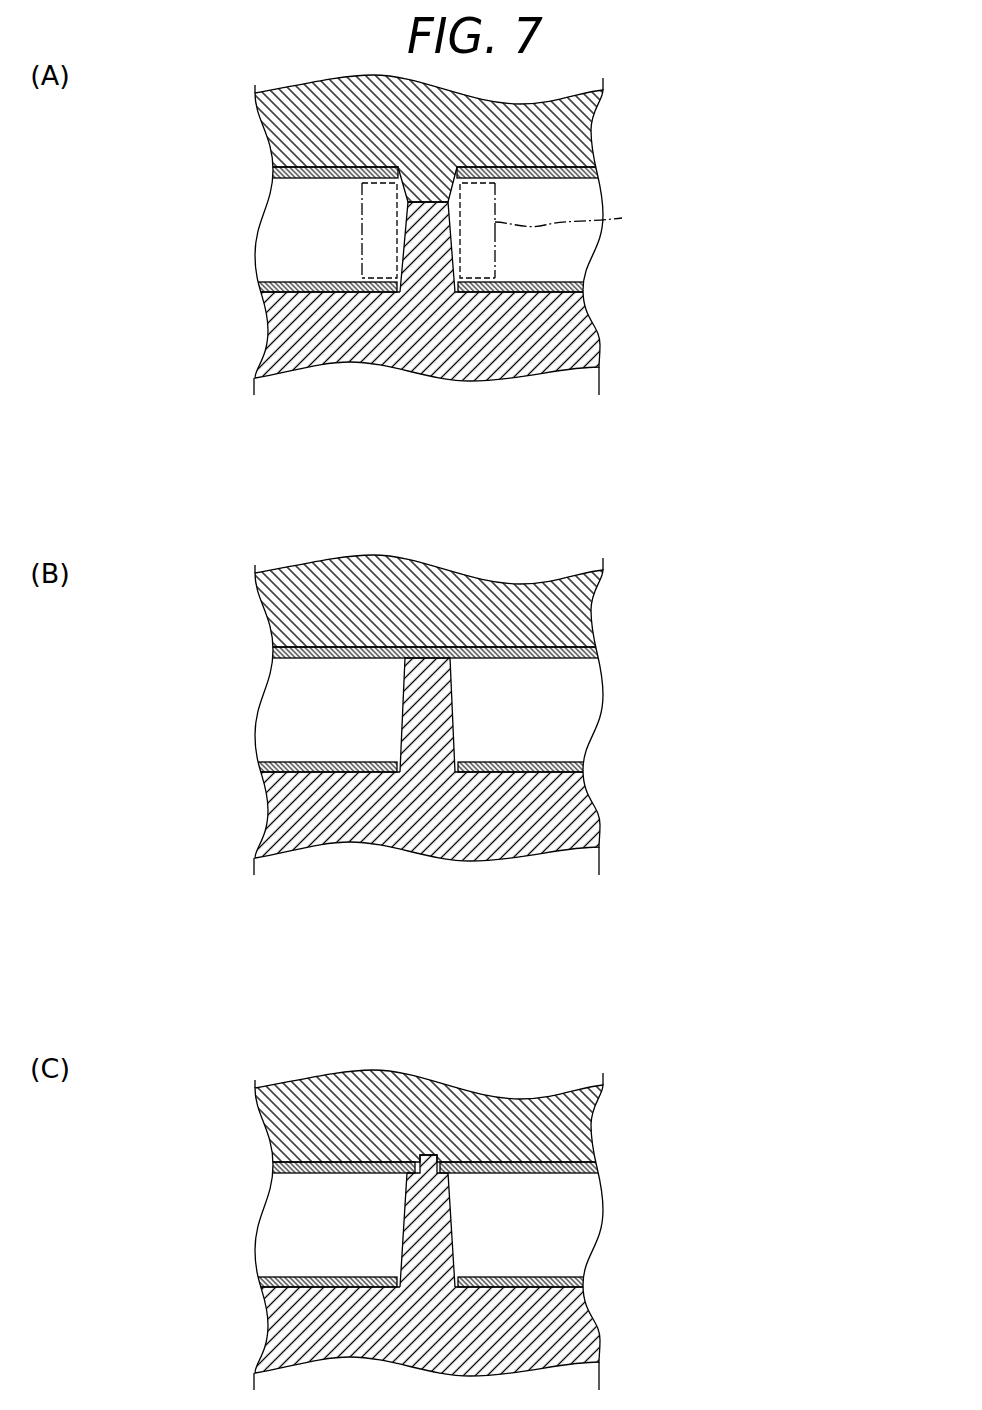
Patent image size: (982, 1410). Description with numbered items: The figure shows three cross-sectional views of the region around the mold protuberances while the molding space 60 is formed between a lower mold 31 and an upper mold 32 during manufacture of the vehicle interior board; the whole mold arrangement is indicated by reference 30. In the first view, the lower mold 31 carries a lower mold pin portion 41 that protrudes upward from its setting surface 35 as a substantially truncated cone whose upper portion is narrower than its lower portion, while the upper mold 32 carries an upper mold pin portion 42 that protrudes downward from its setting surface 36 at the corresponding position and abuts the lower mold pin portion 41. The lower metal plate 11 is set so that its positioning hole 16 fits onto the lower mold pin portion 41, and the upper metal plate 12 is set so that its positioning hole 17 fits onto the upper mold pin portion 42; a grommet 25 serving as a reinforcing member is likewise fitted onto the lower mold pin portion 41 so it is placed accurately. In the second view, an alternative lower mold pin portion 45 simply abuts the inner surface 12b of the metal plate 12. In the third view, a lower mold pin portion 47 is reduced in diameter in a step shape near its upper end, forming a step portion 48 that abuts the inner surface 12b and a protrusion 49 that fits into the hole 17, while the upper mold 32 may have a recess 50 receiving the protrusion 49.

The metal plate 11 is at (293, 281).
The metal plate 12 is at (293, 179).
The inner surface 12b is at (473, 660).
The positioning hole 16 is at (397, 278).
The positioning hole 17 is at (397, 188).
The grommet 25 is at (580, 212).
The sensor structure 30 is at (754, 111).
The lower mold 31 is at (590, 337).
The upper mold 32 is at (598, 122).
The setting surface 35 is at (568, 283).
The setting surface 36 is at (575, 186).
The lower mold pin portion 41 is at (461, 261).
The upper mold pin portion 42 is at (462, 193).
The lower mold pin portion 45 is at (457, 761).
The lower mold pin portion 47 is at (457, 1276).
The step portion 48 is at (442, 1174).
The protrusion 49 is at (437, 1165).
The recess 50 is at (421, 1156).
The molding space 60 is at (268, 233).